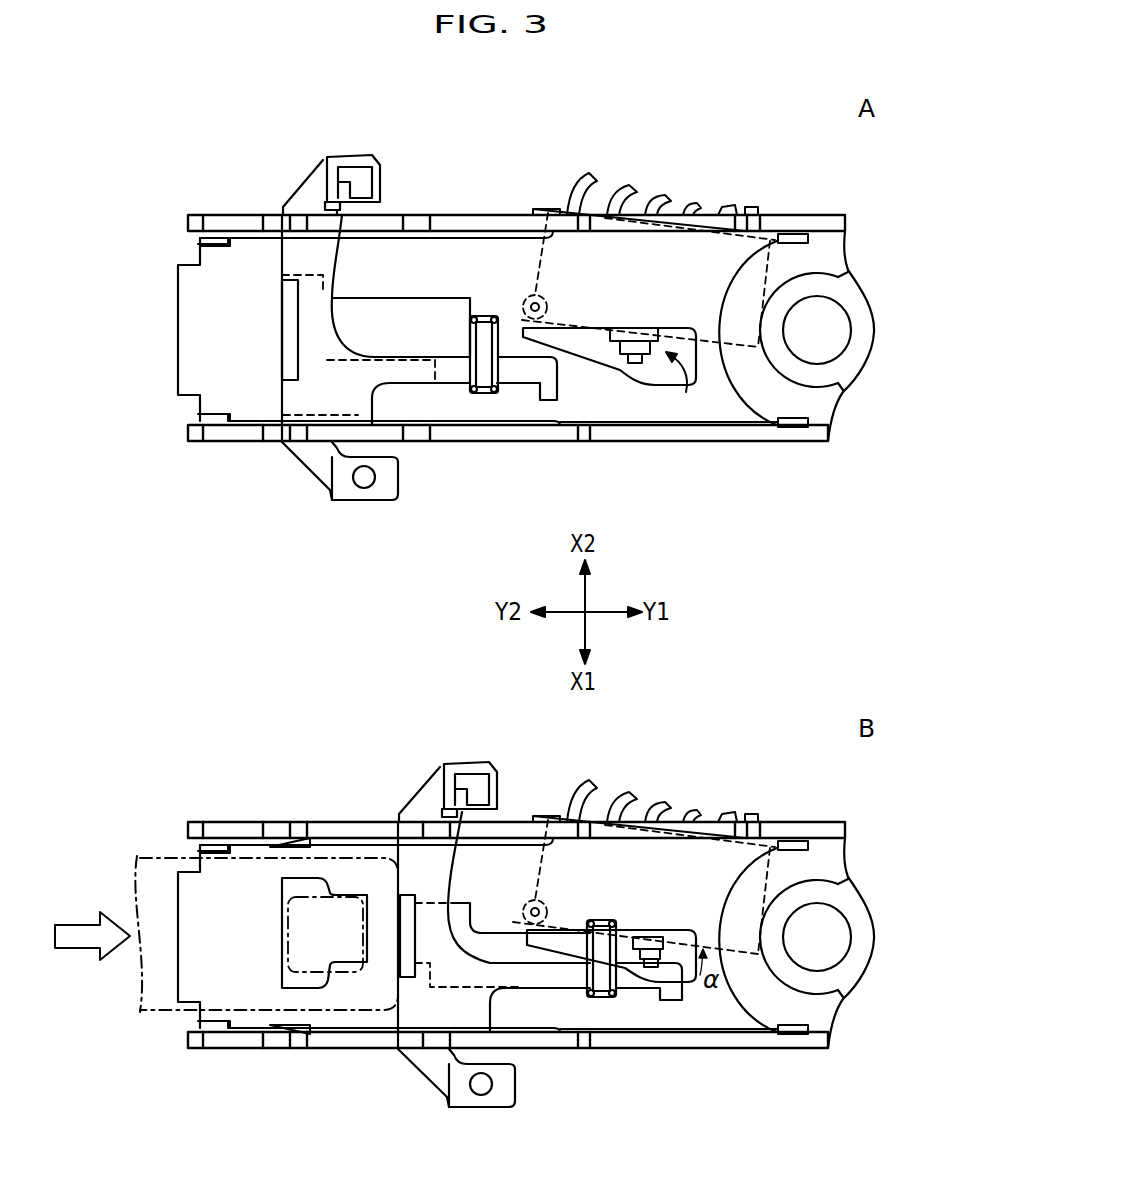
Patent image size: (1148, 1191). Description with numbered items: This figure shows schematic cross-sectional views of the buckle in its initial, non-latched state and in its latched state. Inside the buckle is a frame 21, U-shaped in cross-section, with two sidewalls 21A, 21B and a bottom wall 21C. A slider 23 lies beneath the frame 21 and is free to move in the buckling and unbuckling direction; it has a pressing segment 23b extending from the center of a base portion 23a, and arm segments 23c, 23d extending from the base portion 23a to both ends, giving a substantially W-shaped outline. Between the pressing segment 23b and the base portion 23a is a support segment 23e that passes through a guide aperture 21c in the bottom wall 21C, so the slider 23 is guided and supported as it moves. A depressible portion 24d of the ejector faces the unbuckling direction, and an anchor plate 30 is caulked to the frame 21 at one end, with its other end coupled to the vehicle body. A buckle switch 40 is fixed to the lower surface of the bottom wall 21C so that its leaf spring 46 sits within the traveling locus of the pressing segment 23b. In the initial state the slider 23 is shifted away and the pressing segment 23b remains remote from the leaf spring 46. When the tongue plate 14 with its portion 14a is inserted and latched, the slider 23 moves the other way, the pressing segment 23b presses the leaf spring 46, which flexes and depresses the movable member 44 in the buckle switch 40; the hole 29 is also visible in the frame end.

The tongue plate 14 is at (157, 1017).
The engaging recess 14a is at (348, 988).
The frame 21 is at (860, 252).
The sidewall 21A is at (805, 215).
The sidewall 21B is at (805, 433).
The bottom wall 21C is at (188, 312).
The guide aperture 21c is at (430, 297).
The slider 23 is at (408, 502).
The base portion 23a is at (293, 393).
The pressing segment 23b is at (552, 369).
The arm segment 23c is at (317, 470).
The arm segment 23d is at (315, 175).
The support segment 23e is at (483, 395).
The depressible portion 24d is at (303, 372).
The shaft hole 29 is at (836, 332).
The anchor plate 30 is at (862, 376).
The buckle switch 40 is at (548, 205).
The movable member 44 is at (683, 367).
The leaf spring 46 is at (648, 376).